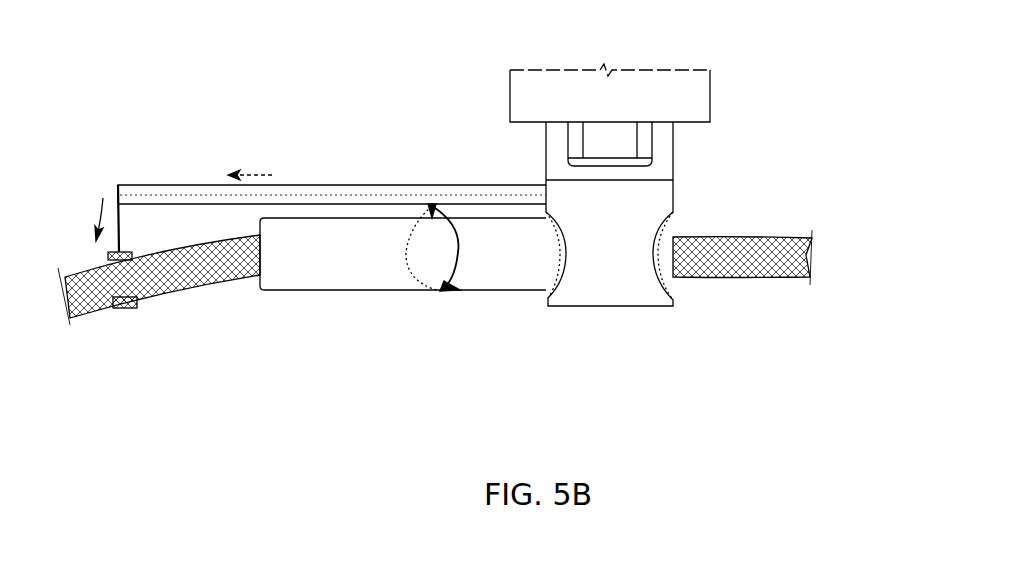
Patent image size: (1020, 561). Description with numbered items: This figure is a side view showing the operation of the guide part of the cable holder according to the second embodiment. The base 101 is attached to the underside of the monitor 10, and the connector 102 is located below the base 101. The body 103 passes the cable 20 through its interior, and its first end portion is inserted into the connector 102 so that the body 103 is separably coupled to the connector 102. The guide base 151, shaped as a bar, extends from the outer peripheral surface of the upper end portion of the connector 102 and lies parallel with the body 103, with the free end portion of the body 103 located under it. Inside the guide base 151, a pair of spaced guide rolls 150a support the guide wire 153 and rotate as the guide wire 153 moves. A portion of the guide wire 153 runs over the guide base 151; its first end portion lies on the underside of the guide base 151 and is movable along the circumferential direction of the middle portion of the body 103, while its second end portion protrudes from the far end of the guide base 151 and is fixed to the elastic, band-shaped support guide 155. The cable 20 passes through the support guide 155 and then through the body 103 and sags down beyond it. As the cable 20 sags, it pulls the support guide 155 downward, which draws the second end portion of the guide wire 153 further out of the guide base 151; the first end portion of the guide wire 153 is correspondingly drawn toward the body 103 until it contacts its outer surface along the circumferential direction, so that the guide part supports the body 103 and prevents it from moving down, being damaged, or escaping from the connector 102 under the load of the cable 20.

The monitor 10 is at (710, 95).
The base 101 is at (677, 152).
The connector 102 is at (598, 307).
The body 103 is at (310, 290).
The guide base 151 is at (310, 185).
The guide rolls 150a is at (119, 184).
The guide wire 153 is at (455, 290).
The support guide 155 is at (122, 310).
The cable 20 is at (770, 237).